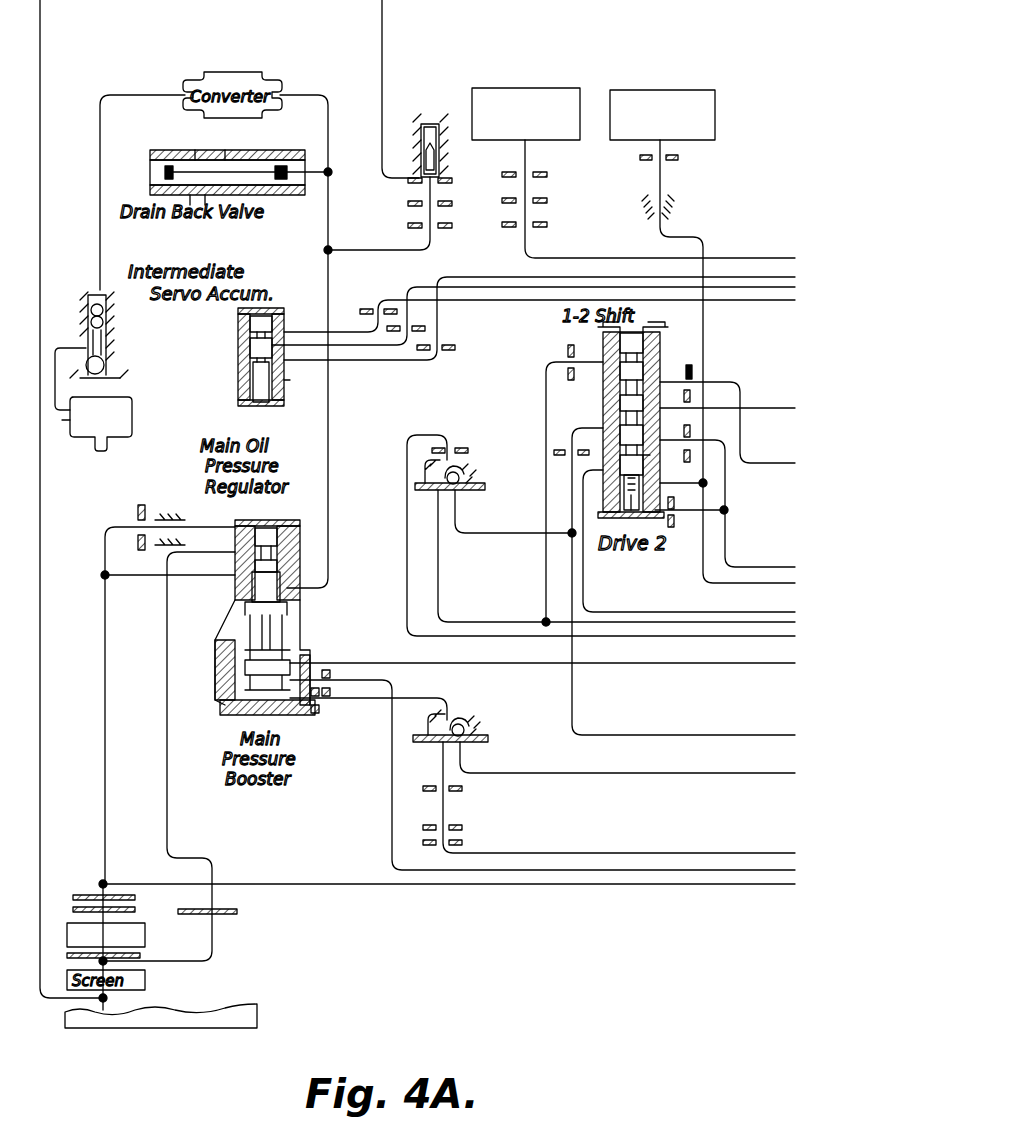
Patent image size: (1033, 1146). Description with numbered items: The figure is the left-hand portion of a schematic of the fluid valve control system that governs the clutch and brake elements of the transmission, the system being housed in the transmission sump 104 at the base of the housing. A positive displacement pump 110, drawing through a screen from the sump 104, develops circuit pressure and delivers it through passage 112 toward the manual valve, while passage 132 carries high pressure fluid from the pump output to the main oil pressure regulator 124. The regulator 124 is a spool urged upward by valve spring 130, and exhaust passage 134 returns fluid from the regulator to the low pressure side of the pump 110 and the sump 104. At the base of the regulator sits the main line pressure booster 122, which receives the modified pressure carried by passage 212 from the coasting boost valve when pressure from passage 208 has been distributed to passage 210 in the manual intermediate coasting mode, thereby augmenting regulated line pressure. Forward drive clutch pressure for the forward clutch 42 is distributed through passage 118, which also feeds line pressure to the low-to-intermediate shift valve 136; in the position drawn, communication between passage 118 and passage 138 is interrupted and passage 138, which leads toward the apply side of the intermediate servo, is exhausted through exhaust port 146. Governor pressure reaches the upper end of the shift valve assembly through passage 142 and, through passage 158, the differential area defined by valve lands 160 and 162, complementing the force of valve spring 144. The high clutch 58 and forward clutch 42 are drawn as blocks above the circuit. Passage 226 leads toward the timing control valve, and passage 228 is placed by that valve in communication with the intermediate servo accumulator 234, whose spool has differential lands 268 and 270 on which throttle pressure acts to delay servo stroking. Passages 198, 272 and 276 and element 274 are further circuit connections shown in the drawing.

The forward drive clutch 42 is at (677, 90).
The high clutch 58 is at (549, 88).
The transmission sump 104 is at (232, 1015).
The positive displacement pump 110 is at (140, 942).
The passage 112 is at (625, 887).
The passage 118 is at (703, 569).
The main line pressure booster 122 is at (295, 656).
The main oil pressure regulator 124 is at (270, 582).
The valve spring 130 is at (292, 614).
The passage 132 is at (103, 655).
The exhaust passage 134 is at (166, 720).
The 1-2 shift valve 136 is at (652, 402).
The passage 138 is at (582, 547).
The passage 142 is at (764, 330).
The valve spring 144 is at (618, 508).
The exhaust port 146 is at (655, 460).
The passage 158 is at (770, 463).
The valve land 160 is at (617, 402).
The valve land 162 is at (650, 378).
The passage 198 is at (760, 567).
The passage 208 is at (494, 622).
The passage 210 is at (525, 638).
The passage 212 is at (574, 774).
The passage 226 is at (594, 258).
The passage 228 is at (347, 330).
The intermediate servo accumulator 234 is at (250, 338).
The valve land 268 is at (284, 358).
The valve land 270 is at (250, 364).
The passage 272 is at (495, 278).
The accumulator plunger 274 is at (253, 381).
The passage 276 is at (360, 348).